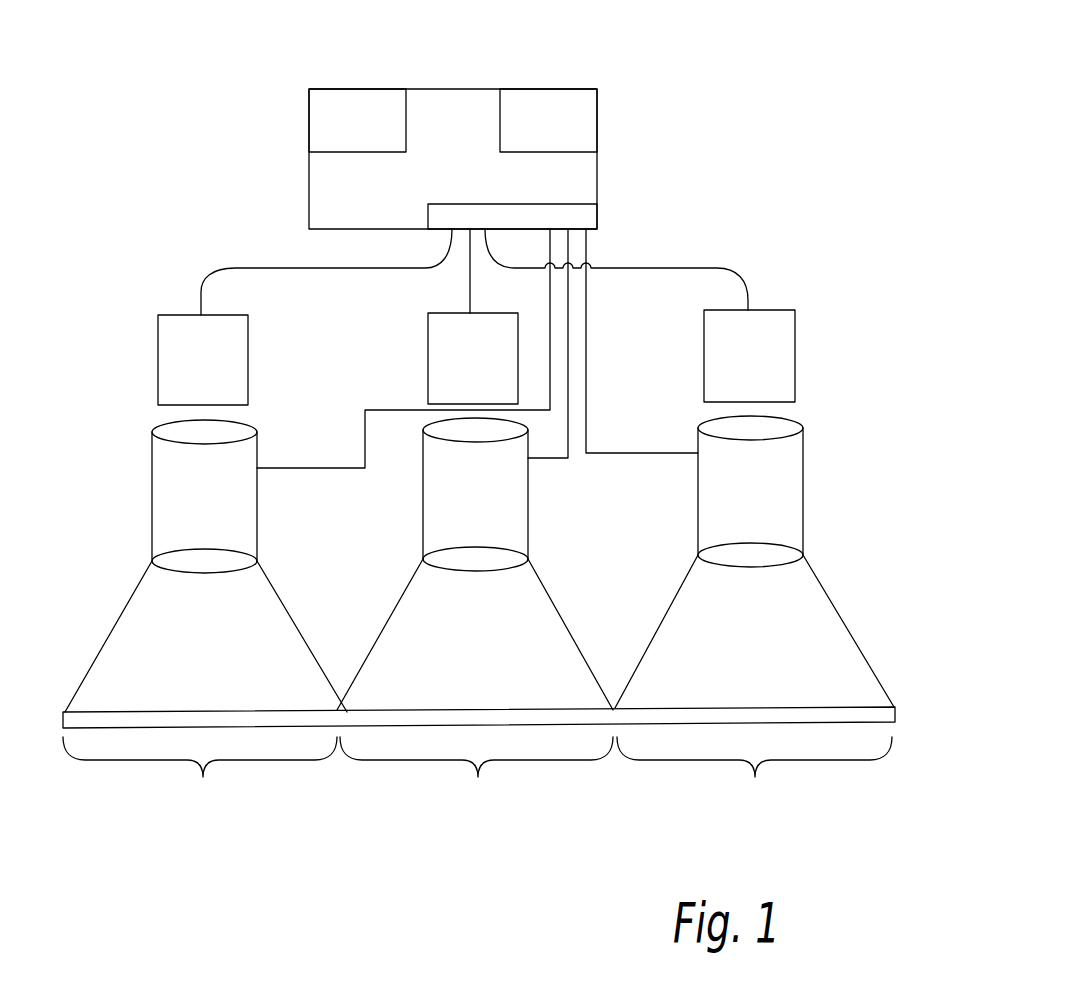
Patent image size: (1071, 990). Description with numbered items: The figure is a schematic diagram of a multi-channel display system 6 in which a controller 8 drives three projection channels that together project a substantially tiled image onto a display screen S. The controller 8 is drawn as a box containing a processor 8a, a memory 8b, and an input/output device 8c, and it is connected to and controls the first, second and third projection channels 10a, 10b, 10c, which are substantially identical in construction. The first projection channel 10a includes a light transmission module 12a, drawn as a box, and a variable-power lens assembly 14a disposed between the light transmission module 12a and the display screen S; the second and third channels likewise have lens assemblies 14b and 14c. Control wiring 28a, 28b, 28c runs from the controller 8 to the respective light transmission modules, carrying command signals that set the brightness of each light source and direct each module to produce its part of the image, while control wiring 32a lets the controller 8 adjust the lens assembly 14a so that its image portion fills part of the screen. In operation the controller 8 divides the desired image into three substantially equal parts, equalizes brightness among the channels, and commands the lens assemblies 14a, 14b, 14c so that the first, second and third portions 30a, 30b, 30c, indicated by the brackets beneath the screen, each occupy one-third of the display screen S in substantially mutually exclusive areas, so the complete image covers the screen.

The display system 6 is at (218, 152).
The controller 8 is at (470, 70).
The processor 8a is at (592, 118).
The memory 8b is at (330, 122).
The input/output device 8c is at (577, 218).
The first projection channel 10a is at (166, 285).
The second projection channel 10b is at (397, 349).
The third projection channel 10c is at (689, 302).
The light transmission module 12a is at (155, 343).
The variable-power lens assembly 14a is at (149, 477).
The second lens assembly 14b is at (422, 532).
The third lens assembly 14c is at (698, 535).
The control wiring 28a is at (242, 262).
The control wiring 28b is at (470, 283).
The control wiring 28c is at (710, 265).
The first portion of the image 30a is at (200, 773).
The second portion of the image 30b is at (476, 773).
The third portion of the image 30c is at (754, 773).
The control wiring 32a is at (287, 466).
The display screen S is at (885, 712).